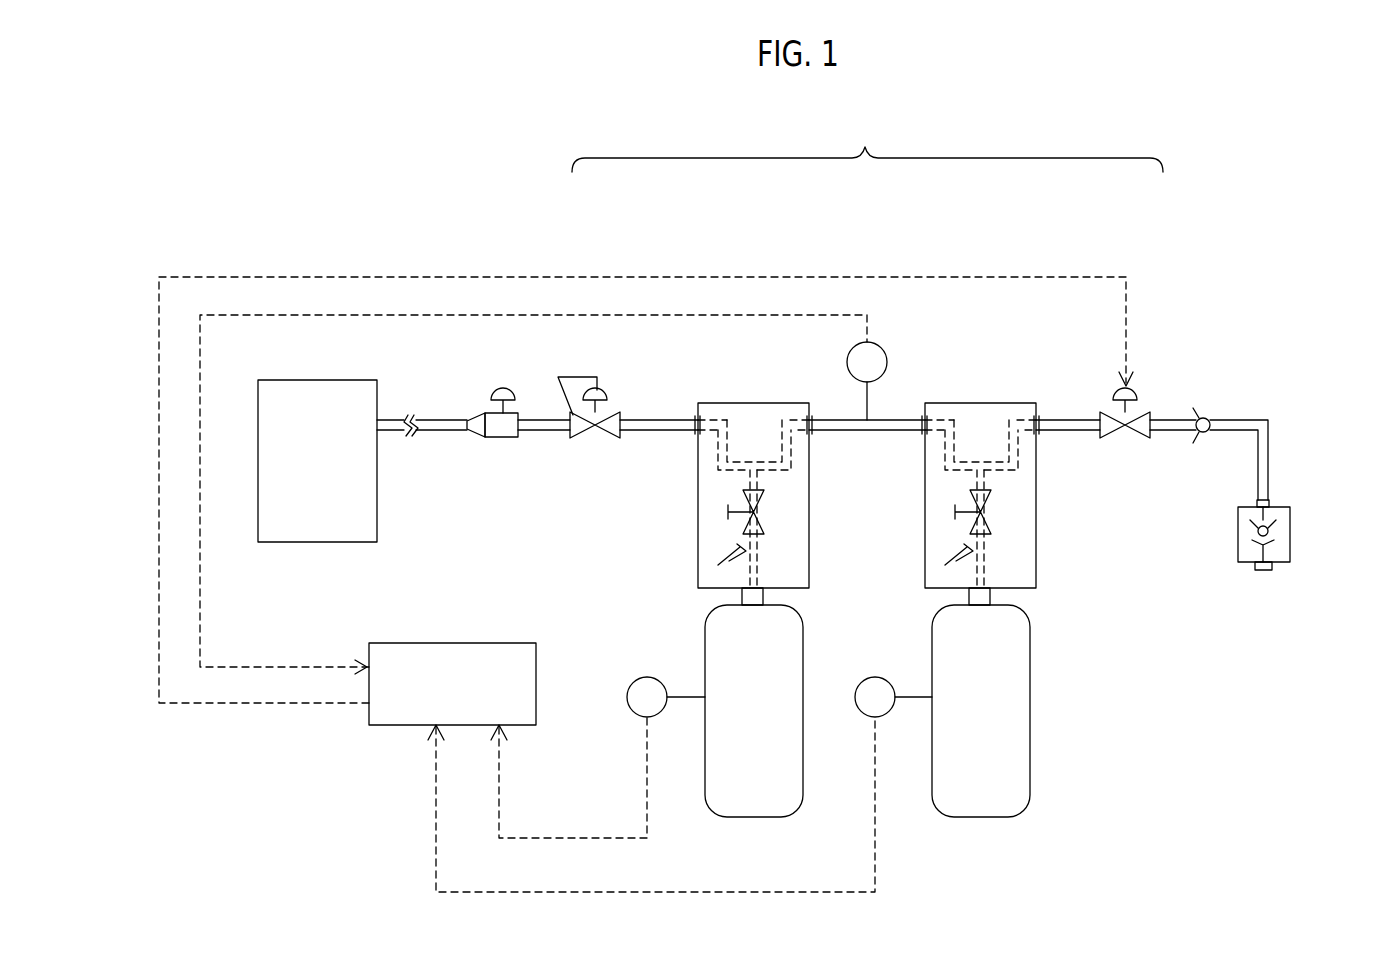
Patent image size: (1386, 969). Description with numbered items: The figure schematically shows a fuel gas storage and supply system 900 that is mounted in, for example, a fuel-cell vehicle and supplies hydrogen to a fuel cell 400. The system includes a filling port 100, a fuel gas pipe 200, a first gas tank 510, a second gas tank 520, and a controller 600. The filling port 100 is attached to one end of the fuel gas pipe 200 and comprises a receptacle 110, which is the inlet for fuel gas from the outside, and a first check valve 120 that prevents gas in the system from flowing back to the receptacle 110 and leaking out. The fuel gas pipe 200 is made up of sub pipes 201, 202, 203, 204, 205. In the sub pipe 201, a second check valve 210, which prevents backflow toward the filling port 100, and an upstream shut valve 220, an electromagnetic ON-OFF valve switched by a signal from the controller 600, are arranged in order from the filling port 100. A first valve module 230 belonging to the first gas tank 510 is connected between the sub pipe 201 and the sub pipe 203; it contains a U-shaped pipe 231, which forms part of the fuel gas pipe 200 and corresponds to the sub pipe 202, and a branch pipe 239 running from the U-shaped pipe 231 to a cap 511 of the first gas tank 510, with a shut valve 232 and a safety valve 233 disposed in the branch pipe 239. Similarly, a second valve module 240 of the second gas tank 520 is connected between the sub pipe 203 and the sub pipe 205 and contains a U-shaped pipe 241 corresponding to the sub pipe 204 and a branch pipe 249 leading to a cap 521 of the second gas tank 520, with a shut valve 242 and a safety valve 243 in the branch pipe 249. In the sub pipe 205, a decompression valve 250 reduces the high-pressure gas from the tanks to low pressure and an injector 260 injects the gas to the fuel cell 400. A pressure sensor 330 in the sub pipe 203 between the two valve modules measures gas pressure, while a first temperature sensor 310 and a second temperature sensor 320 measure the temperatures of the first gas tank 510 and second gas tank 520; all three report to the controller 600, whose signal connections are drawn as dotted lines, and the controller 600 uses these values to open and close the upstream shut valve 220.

The fuel gas storage and supply system 900 is at (1271, 165).
The fuel gas pipe 200 is at (867, 143).
The sub pipe 201 is at (1065, 418).
The sub pipe 202 is at (1026, 402).
The sub pipe 203 is at (830, 418).
The sub pipe 204 is at (712, 402).
The sub pipe 205 is at (643, 418).
The fuel cell 400 is at (292, 380).
The injector 260 is at (496, 390).
The decompression valve 250 is at (600, 385).
The second valve module 240 is at (730, 402).
The U-shaped pipe 241 is at (708, 460).
The shut valve 242 is at (728, 506).
The safety valve 243 is at (712, 548).
The branch pipe 249 is at (748, 578).
The first valve module 230 is at (945, 402).
The U-shaped pipe 231 is at (935, 460).
The shut valve 232 is at (955, 506).
The safety valve 233 is at (939, 548).
The branch pipe 239 is at (975, 578).
The pressure sensor 330 is at (888, 360).
The second temperature sensor 320 is at (635, 718).
The first temperature sensor 310 is at (865, 718).
The upstream shut valve 220 is at (1130, 440).
The second check valve 210 is at (1199, 412).
The filling port 100 is at (1292, 535).
The receptacle 110 is at (1262, 572).
The first check valve 120 is at (1240, 535).
The second gas tank 520 is at (803, 668).
The cap 521 is at (742, 598).
The first gas tank 510 is at (1029, 668).
The cap 511 is at (992, 598).
The controller 600 is at (435, 643).